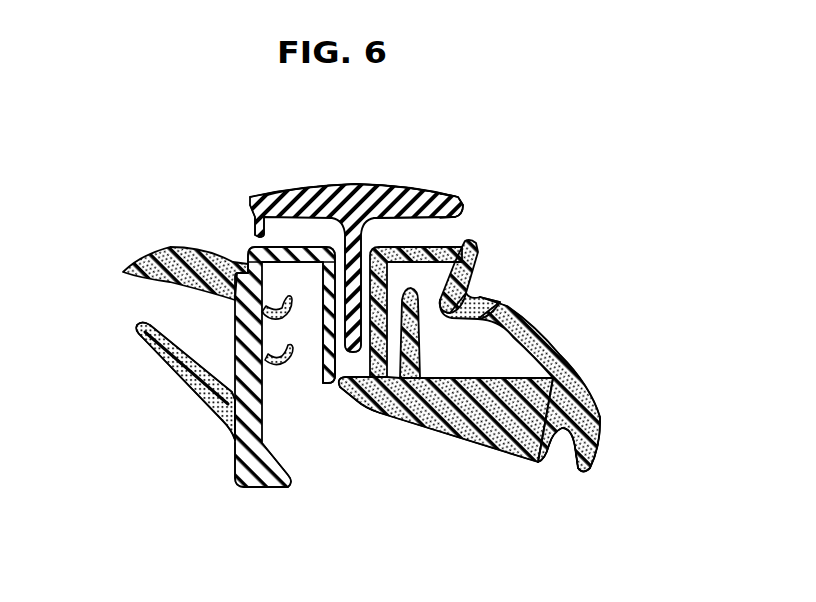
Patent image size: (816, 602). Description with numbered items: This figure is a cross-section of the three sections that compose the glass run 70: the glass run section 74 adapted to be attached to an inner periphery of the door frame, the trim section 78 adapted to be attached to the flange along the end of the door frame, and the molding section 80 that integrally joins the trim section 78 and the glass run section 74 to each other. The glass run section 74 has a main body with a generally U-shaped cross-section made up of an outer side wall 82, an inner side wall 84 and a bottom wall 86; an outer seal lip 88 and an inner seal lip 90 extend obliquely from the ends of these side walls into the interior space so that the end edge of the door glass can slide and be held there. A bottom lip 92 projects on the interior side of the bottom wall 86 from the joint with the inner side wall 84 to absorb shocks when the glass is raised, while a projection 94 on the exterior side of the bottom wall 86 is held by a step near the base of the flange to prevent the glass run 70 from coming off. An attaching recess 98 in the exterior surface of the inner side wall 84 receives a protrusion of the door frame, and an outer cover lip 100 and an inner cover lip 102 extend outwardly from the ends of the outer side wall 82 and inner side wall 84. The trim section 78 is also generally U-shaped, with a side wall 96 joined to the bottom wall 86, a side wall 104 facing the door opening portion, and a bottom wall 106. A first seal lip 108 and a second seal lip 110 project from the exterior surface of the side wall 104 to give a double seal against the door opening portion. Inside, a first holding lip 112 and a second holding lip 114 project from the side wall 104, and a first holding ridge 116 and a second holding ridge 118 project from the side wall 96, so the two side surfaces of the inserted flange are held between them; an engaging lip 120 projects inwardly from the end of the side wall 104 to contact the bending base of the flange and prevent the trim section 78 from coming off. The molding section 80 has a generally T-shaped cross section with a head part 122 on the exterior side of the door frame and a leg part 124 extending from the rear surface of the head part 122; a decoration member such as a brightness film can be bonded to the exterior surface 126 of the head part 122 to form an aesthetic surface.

The glass run 70 is at (480, 187).
The glass run section 74 is at (589, 367).
The trim section 78 is at (188, 414).
The molding section 80 is at (280, 184).
The outer side wall 82 is at (464, 246).
The inner side wall 84 is at (437, 406).
The bottom wall 86 is at (371, 406).
The outer seal lip 88 is at (480, 282).
The inner seal lip 90 is at (529, 327).
The bottom lip 92 is at (418, 328).
The projection 94 is at (341, 395).
The side wall 96 is at (322, 335).
The attaching recess 98 is at (560, 442).
The outer cover lip 100 is at (472, 243).
The inner cover lip 102 is at (587, 474).
The side wall 104 is at (264, 356).
The bottom wall 106 is at (260, 216).
The first seal lip 108 is at (143, 353).
The second seal lip 110 is at (142, 253).
The first holding lip 112 is at (236, 460).
The second holding lip 114 is at (323, 310).
The first holding ridge 116 is at (317, 385).
The second holding ridge 118 is at (290, 249).
The engaging lip 120 is at (277, 488).
The head part 122 is at (318, 187).
The leg part 124 is at (403, 195).
The exterior surface 126 is at (360, 186).